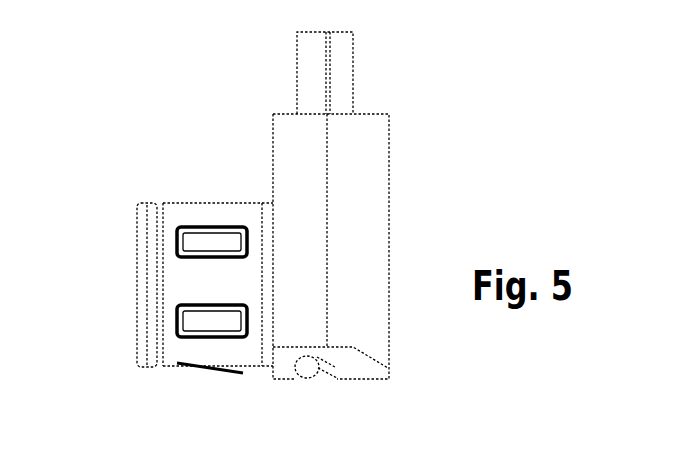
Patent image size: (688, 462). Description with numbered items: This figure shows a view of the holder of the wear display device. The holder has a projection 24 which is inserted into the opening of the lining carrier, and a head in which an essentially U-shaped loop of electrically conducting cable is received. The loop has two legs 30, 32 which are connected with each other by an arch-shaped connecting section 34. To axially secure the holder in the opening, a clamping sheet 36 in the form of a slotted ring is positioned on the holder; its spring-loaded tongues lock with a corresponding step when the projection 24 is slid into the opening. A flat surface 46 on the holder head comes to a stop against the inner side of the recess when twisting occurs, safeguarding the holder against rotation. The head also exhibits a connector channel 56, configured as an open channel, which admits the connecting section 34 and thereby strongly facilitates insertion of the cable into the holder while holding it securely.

The projection 24 is at (133, 270).
The leg 30 is at (297, 72).
The leg 32 is at (353, 68).
The connecting section 34 is at (320, 370).
The clamping sheet 36 is at (178, 202).
The flat surface 46 is at (287, 150).
The connector channel 56 is at (310, 372).